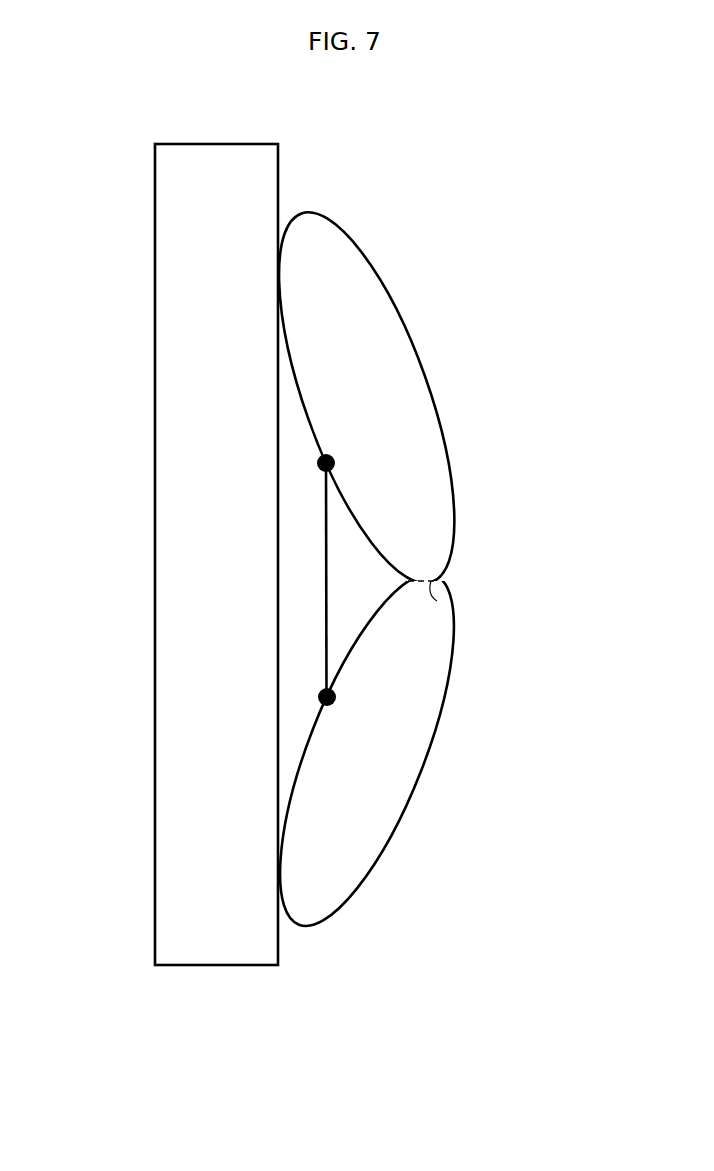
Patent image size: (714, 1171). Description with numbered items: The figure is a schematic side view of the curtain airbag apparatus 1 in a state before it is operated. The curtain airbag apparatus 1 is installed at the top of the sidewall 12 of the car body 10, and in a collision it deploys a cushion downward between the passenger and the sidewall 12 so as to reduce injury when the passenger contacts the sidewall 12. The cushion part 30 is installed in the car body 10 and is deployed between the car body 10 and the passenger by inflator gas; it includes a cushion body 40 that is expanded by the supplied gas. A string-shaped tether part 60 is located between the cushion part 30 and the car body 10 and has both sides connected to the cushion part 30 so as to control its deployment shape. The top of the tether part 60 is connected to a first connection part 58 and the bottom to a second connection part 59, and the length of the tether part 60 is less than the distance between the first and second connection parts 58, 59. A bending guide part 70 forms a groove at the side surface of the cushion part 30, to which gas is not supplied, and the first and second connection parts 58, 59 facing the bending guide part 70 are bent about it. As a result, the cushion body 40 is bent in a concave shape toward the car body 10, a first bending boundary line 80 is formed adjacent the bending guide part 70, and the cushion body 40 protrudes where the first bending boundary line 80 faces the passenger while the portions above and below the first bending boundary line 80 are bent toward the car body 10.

The curtain airbag apparatus 1 is at (492, 222).
The car body 10 is at (305, 160).
The sidewall 12 is at (232, 163).
The cushion part 30 is at (462, 385).
The cushion body 40 is at (447, 503).
The first connection part 58 is at (318, 463).
The second connection part 59 is at (318, 697).
The tether part 60 is at (325, 574).
The bending guide part 70 is at (475, 573).
The first bending boundary line 80 is at (437, 601).